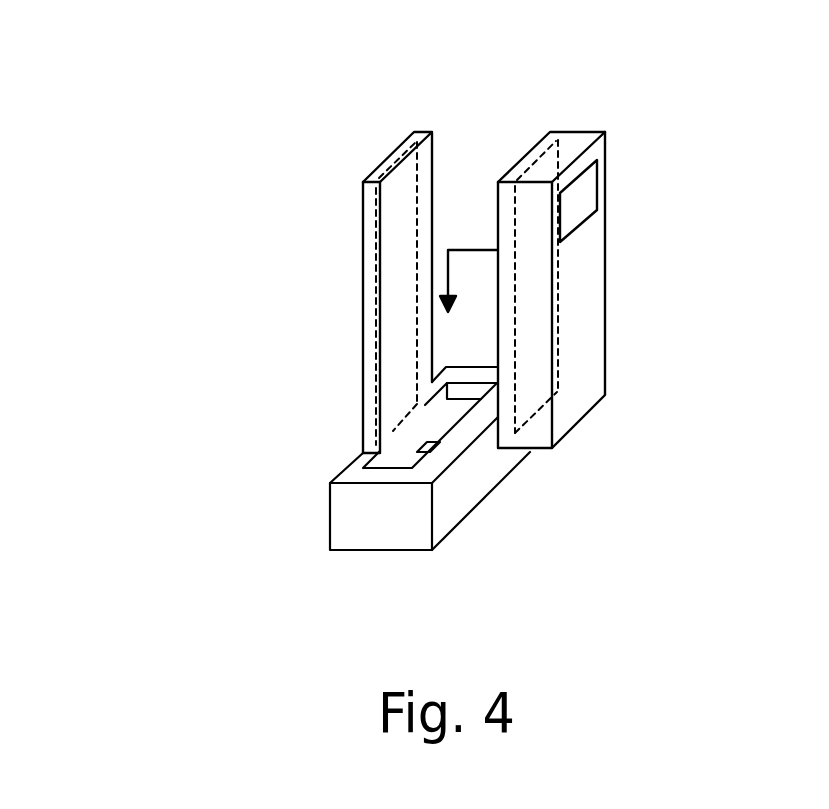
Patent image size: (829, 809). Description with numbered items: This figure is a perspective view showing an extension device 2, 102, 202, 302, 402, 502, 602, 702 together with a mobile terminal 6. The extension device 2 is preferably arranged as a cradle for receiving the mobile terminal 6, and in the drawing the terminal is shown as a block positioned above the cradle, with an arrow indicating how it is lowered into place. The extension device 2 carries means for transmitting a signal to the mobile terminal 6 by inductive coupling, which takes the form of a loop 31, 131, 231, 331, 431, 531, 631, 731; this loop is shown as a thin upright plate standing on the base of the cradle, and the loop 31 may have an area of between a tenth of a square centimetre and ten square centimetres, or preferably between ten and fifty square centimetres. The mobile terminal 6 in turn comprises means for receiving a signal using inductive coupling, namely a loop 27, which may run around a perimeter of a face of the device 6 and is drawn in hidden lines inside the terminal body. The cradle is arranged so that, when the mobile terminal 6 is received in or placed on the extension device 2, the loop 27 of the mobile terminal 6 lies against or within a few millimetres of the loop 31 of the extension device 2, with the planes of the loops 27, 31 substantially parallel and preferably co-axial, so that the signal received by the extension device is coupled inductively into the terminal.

The extension device 2 is at (275, 459).
The extension device 102 is at (275, 459).
The extension device 202 is at (275, 459).
The extension device 302 is at (275, 459).
The extension device 402 is at (275, 459).
The extension device 502 is at (275, 459).
The extension device 602 is at (275, 459).
The extension device 702 is at (350, 518).
The loop 31 is at (243, 292).
The loop 131 is at (243, 292).
The loop 231 is at (243, 292).
The loop 331 is at (243, 292).
The loop 431 is at (243, 292).
The loop 531 is at (243, 292).
The loop 631 is at (243, 292).
The loop 731 is at (378, 322).
The loop 27 is at (530, 172).
The mobile terminal 6 is at (597, 240).